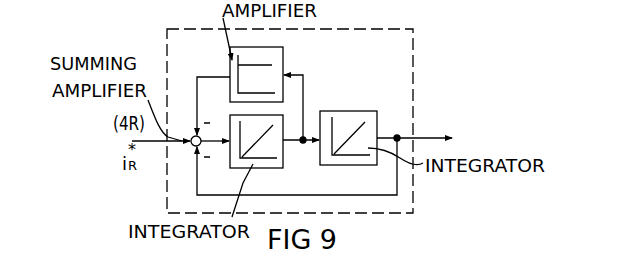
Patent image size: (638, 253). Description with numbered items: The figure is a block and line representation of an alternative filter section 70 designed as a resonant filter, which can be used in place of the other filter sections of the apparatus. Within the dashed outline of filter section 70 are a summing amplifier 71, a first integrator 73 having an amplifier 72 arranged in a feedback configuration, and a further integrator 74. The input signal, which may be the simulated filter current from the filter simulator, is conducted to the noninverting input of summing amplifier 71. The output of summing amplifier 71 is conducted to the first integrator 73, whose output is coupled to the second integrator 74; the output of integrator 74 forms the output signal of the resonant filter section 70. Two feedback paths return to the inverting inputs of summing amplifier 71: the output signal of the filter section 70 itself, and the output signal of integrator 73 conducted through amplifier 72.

The filter section 70 is at (413, 46).
The summing amplifier 71 is at (192, 137).
The amplifier 72 is at (283, 57).
The integrator 73 is at (285, 160).
The further integrator 74 is at (333, 111).